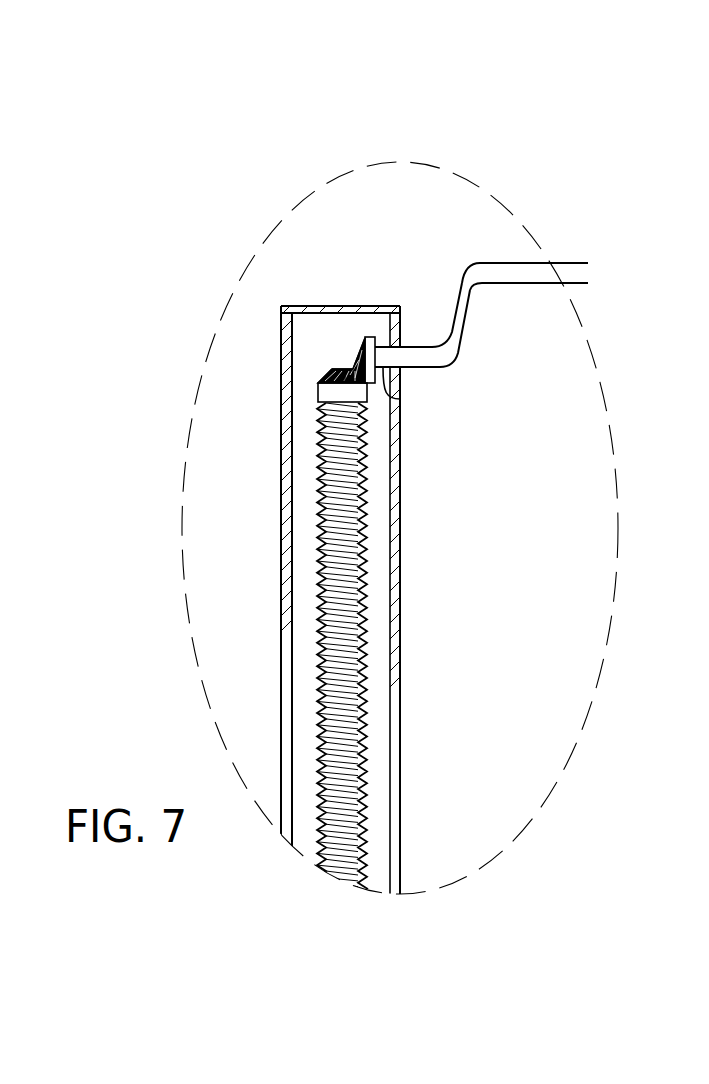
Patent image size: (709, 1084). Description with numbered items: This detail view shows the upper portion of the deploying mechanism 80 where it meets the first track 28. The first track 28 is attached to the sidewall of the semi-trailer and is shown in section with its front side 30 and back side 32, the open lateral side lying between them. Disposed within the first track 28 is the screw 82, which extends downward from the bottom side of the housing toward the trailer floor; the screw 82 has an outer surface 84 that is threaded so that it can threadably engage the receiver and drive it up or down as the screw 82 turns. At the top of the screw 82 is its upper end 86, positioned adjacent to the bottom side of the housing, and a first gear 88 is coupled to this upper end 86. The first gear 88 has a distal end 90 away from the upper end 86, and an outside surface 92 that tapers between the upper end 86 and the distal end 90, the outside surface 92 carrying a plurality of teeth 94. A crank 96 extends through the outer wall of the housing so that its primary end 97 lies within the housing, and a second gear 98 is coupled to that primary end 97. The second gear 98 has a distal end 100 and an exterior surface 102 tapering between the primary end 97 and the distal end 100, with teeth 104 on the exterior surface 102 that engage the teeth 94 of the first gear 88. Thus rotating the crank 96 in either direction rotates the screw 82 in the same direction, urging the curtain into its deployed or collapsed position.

The first track 28 is at (400, 550).
The front side 30 is at (400, 472).
The back side 32 is at (280, 392).
The deploying mechanism 80 is at (448, 257).
The screw 82 is at (360, 682).
The outer surface 84 is at (360, 773).
The upper end 86 is at (318, 380).
The first gear 88 is at (372, 404).
The distal end 90 is at (340, 368).
The outside surface 92 is at (330, 371).
The teeth 94 is at (350, 368).
The crank 96 is at (512, 263).
The primary end 97 is at (402, 400).
The second gear 98 is at (380, 347).
The distal end 100 is at (357, 368).
The exterior surface 102 is at (370, 338).
The teeth 104 is at (361, 350).